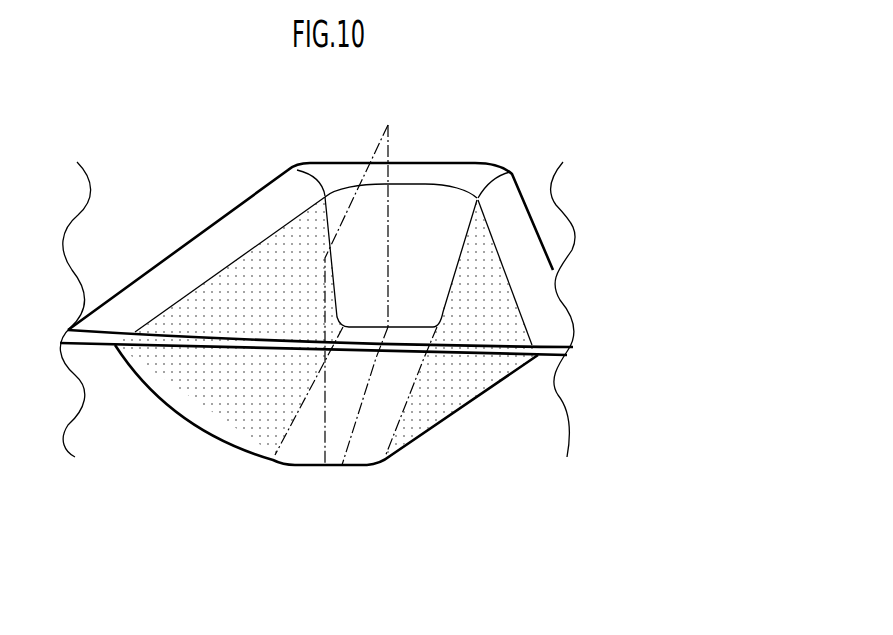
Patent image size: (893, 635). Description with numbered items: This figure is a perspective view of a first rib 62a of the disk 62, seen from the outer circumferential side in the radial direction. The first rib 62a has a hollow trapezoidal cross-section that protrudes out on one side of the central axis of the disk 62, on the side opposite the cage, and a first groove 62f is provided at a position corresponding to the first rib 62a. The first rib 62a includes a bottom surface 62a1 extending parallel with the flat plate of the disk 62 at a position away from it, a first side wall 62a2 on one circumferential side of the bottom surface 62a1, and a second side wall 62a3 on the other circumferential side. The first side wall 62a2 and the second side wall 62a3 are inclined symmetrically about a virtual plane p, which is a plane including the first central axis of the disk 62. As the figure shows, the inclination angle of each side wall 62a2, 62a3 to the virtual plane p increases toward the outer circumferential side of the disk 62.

The disk 62 is at (547, 123).
The first groove 62f is at (445, 198).
The first rib 62a is at (405, 462).
The bottom surface 62a1 is at (342, 466).
The first side wall 62a2 is at (453, 417).
The second side wall 62a3 is at (203, 420).
The virtual plane p is at (389, 127).